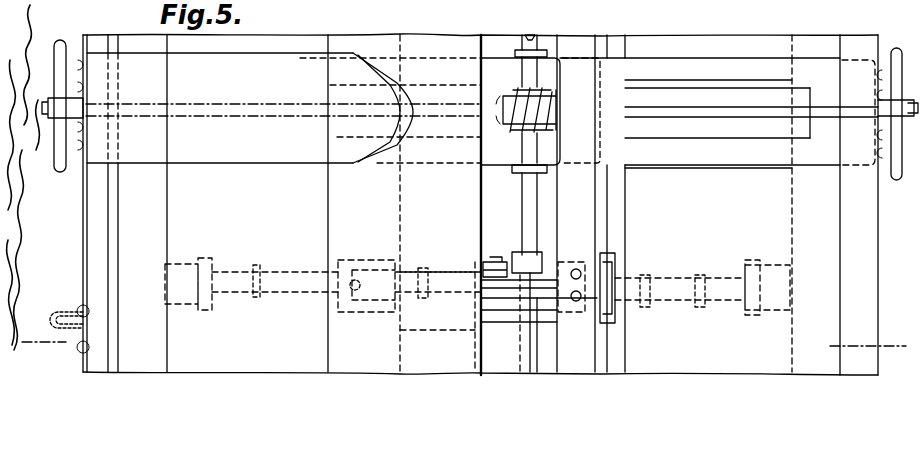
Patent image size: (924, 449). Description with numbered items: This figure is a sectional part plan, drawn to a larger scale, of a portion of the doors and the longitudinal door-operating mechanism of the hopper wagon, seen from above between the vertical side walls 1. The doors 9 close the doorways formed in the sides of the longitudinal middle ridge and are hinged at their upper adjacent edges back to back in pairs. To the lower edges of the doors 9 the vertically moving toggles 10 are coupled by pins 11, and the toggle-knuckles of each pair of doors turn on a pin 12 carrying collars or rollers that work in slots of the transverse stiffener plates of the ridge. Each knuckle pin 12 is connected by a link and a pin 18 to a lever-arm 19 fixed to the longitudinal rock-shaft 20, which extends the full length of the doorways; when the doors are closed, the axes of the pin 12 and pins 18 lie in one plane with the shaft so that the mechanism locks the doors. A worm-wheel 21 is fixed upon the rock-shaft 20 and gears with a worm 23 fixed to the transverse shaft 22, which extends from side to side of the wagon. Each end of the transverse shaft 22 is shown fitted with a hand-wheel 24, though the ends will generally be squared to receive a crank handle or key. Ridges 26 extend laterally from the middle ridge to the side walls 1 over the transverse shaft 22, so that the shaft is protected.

The vertical side wall 1 is at (80, 220).
The door 9 is at (474, 205).
The toggle 10 is at (438, 273).
The pin 11 is at (476, 297).
The pin of the toggle-knuckles 12 is at (460, 317).
The pin 18 is at (492, 258).
The lever-arm 19 is at (518, 270).
The longitudinal rock-shaft 20 is at (524, 188).
The worm-wheel 21 is at (503, 118).
The transverse shaft 22 is at (719, 113).
The worm 23 is at (526, 82).
The hand-wheel 24 is at (79, 137).
The ridge 26 is at (283, 108).